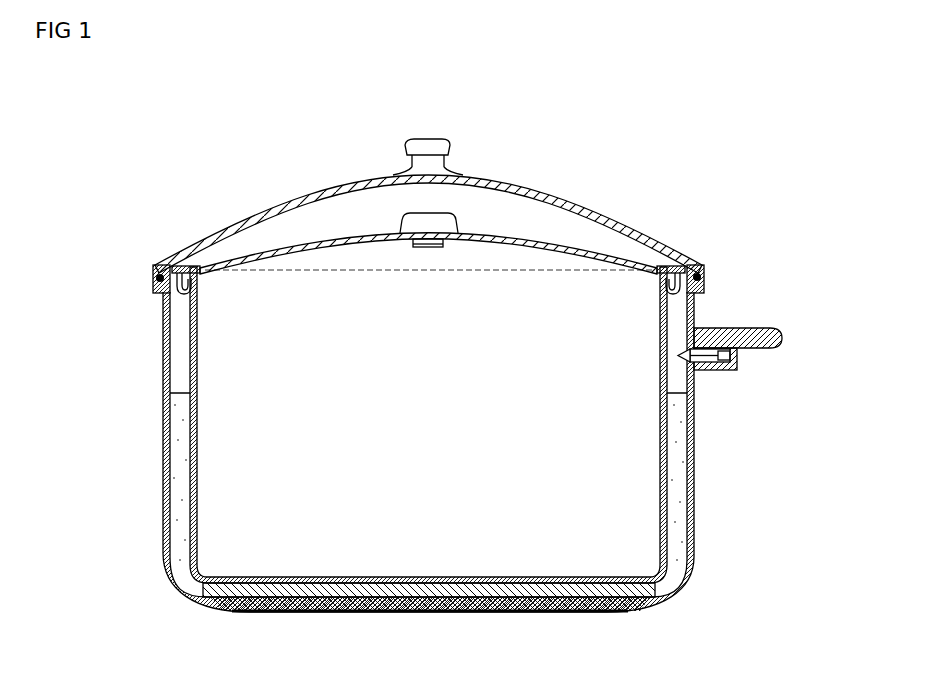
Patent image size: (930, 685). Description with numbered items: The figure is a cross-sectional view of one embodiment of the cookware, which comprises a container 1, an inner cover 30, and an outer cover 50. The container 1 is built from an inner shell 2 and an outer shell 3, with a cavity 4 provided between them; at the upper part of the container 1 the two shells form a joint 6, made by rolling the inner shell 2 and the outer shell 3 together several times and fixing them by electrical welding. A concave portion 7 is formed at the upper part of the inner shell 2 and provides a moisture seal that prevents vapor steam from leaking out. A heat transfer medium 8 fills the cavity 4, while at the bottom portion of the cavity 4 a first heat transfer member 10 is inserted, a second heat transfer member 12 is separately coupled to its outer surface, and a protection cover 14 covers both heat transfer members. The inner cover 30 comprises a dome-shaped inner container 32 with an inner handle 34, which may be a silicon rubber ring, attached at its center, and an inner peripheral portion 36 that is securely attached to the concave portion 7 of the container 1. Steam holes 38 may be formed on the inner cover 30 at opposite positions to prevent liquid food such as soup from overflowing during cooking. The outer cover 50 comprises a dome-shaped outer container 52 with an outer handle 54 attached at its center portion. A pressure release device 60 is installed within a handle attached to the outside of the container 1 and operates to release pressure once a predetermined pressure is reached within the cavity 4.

The container 1 is at (303, 497).
The inner shell 2 is at (661, 455).
The outer shell 3 is at (694, 430).
The cavity 4 is at (681, 386).
The joint 6 is at (154, 280).
The concave portion 7 is at (178, 270).
The heat transfer medium 8 is at (175, 428).
The first heat transfer member 10 is at (514, 581).
The second heat transfer member 12 is at (653, 599).
The protection cover 14 is at (620, 614).
The inner cover 30 is at (606, 240).
The inner container 32 is at (493, 238).
The inner handle 34 is at (413, 224).
The inner peripheral portion 36 is at (202, 294).
The steam holes 38 is at (530, 243).
The outer cover 50 is at (567, 184).
The outer container 52 is at (488, 184).
The outer handle 54 is at (410, 148).
The pressure release device 60 is at (757, 320).